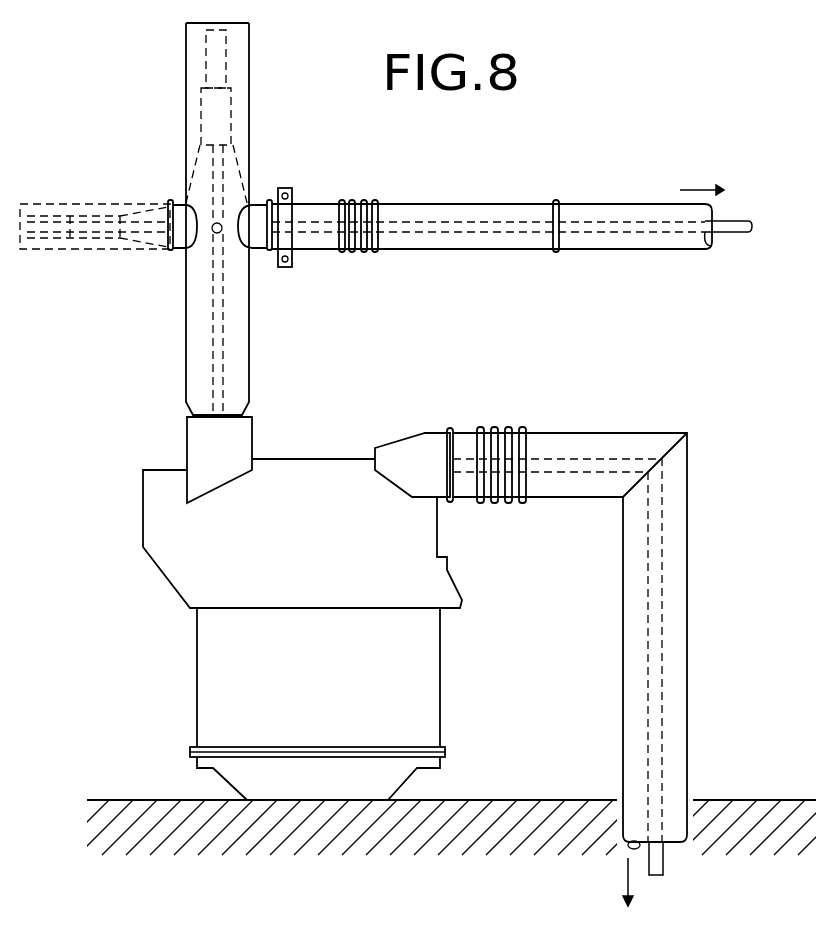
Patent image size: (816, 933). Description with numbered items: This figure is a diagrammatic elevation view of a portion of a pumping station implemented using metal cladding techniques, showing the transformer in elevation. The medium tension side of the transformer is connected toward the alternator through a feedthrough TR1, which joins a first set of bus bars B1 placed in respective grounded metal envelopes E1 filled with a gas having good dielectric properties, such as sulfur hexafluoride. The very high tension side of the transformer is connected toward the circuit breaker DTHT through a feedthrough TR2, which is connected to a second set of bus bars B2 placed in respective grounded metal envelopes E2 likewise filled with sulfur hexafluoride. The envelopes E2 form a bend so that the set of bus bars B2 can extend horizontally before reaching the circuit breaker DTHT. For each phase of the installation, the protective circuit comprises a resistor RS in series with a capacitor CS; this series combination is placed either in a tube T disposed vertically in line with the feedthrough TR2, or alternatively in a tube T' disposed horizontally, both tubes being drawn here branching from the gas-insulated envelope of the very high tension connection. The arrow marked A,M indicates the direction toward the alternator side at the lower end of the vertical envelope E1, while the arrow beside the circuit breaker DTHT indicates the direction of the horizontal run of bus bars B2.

The tube T is at (192, 219).
The resistor RS is at (226, 50).
The capacitor CS is at (231, 125).
The tube T' is at (95, 203).
The grounded metal envelope E2 is at (411, 203).
The second set of bus bars B2 is at (491, 222).
The circuit breaker DTHT is at (731, 190).
The feedthrough TR2 is at (242, 440).
The feedthrough TR1 is at (415, 448).
The grounded metal envelope E1 is at (687, 647).
The first set of bus bars B1 is at (663, 590).
The incoming flow direction A,M is at (603, 882).